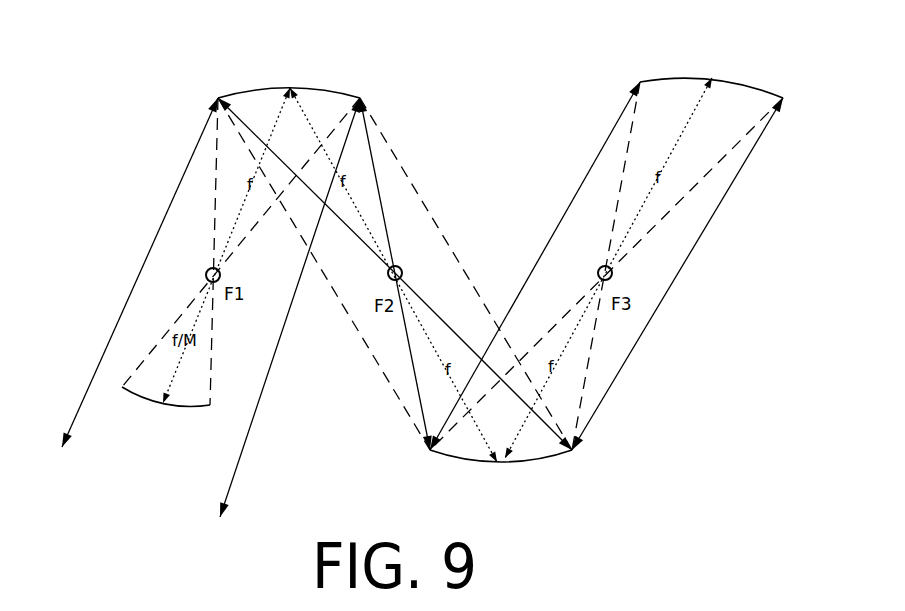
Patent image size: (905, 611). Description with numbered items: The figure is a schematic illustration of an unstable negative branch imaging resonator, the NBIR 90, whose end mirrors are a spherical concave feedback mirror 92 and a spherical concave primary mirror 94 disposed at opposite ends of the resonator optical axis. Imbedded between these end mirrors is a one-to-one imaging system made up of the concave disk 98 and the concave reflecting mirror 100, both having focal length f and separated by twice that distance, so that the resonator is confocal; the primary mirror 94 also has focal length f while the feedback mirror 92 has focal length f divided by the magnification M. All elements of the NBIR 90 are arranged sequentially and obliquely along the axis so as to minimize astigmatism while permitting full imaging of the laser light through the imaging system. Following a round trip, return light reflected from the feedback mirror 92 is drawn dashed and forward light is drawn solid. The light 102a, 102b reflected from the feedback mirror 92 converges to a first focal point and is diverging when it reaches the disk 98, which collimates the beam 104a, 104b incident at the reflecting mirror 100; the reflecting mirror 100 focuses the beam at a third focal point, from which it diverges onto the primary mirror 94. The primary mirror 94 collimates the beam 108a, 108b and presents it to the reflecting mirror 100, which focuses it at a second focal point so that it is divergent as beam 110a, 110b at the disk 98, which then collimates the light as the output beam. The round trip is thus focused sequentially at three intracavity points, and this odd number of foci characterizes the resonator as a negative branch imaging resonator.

The unstable NBIR 90 is at (246, 36).
The feedback mirror 92 is at (189, 408).
The primary mirror 94 is at (752, 84).
The disk D1 98 is at (329, 93).
The mirror R1 100 is at (553, 455).
The light reflected from feedback mirror 102a is at (154, 353).
The light reflected from feedback mirror 102b is at (213, 320).
The collimated beam 104a is at (420, 197).
The collimated beam 104b is at (374, 355).
The collimated beam 108a is at (596, 160).
The collimated beam 108b is at (687, 258).
The divergent beam 110a is at (420, 300).
The divergent beam 110b is at (386, 270).